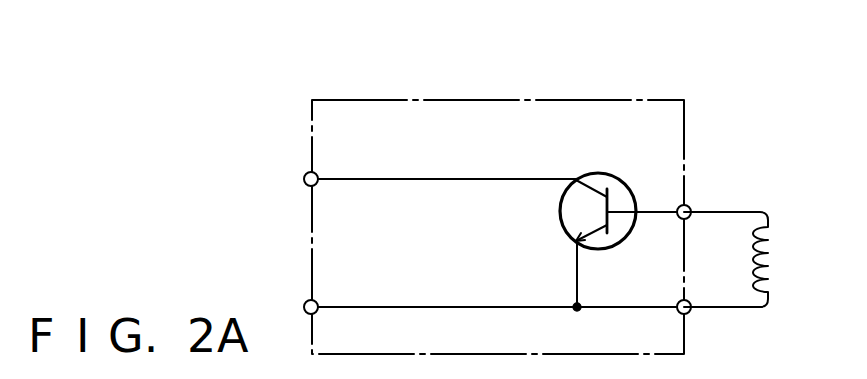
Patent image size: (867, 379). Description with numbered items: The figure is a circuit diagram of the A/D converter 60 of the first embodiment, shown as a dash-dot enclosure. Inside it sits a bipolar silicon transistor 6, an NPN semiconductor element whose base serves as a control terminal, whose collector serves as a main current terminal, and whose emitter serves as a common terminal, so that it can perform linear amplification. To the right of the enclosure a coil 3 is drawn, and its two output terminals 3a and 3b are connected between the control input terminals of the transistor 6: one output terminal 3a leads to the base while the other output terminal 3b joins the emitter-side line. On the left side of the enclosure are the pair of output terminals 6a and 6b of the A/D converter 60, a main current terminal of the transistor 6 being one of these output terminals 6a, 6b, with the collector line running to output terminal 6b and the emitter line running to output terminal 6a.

The A/D converter 60 is at (545, 98).
The bipolar silicon transistor 6 is at (598, 172).
The output terminal 6a is at (304, 301).
The output terminal 6b is at (305, 173).
The coil 3 is at (768, 252).
The output terminal of the coil 3a is at (690, 207).
The output terminal of the coil 3b is at (689, 313).